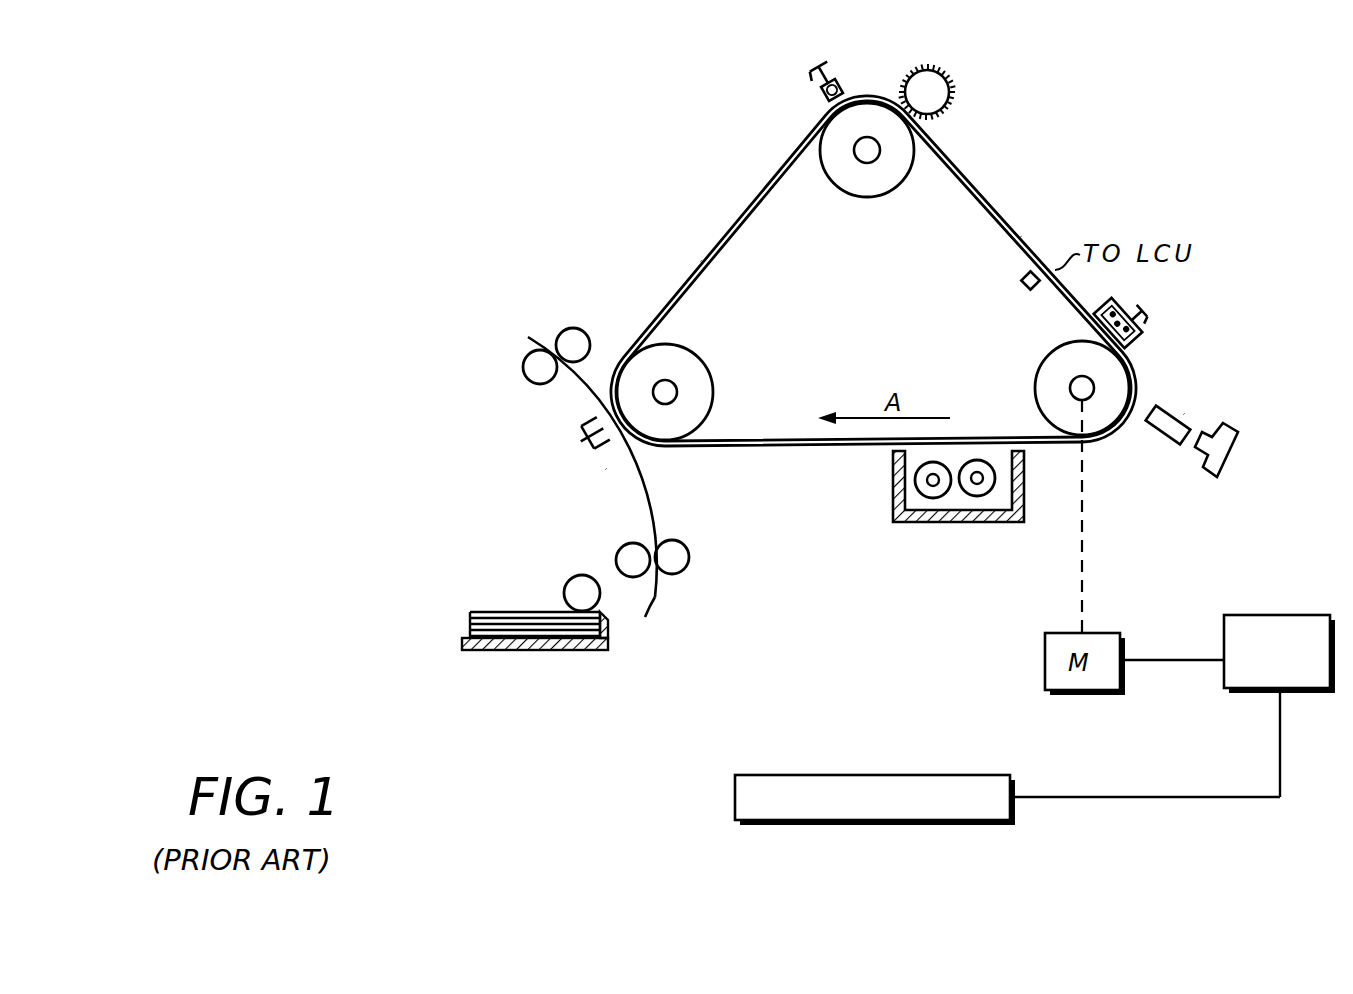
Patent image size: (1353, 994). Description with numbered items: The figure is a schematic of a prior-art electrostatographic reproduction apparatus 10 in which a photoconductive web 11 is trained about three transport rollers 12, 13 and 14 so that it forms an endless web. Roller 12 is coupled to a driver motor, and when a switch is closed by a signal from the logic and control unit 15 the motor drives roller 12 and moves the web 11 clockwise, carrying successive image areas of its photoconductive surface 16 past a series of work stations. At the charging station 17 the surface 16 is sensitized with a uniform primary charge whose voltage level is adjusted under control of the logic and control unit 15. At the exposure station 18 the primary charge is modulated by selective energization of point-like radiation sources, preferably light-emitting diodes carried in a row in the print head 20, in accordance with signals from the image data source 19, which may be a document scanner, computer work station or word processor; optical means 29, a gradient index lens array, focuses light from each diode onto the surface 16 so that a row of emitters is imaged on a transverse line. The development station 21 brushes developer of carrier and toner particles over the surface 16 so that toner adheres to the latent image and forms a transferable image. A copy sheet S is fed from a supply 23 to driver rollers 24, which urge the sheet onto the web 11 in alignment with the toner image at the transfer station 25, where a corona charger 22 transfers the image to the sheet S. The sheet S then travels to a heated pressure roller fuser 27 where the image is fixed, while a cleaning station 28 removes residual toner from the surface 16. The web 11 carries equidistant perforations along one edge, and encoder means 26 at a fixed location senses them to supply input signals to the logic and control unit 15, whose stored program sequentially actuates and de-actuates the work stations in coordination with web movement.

The electrostatographic reproduction apparatus 10 is at (703, 191).
The photoconductive web 11 is at (700, 263).
The transport roller 12 is at (1052, 356).
The transport roller 13 is at (867, 197).
The transport roller 14 is at (705, 360).
The logic and control unit 15 is at (1224, 626).
The photoconductive surface 16 is at (1020, 237).
The charging station 17 is at (1145, 350).
The exposure station 18 is at (1186, 412).
The image data source 19 is at (945, 775).
The print head 20 is at (1207, 480).
The development station 21 is at (920, 541).
The corona charger 22 is at (572, 441).
The supply 23 is at (550, 650).
The driver rollers 24 is at (626, 548).
The transfer station 25 is at (600, 472).
The encoder means 26 is at (1026, 284).
The heated pressure roller fuser 27 is at (529, 349).
The cleaning station 28 is at (950, 82).
The optical means 29 is at (1165, 441).
The copy sheet S is at (580, 385).